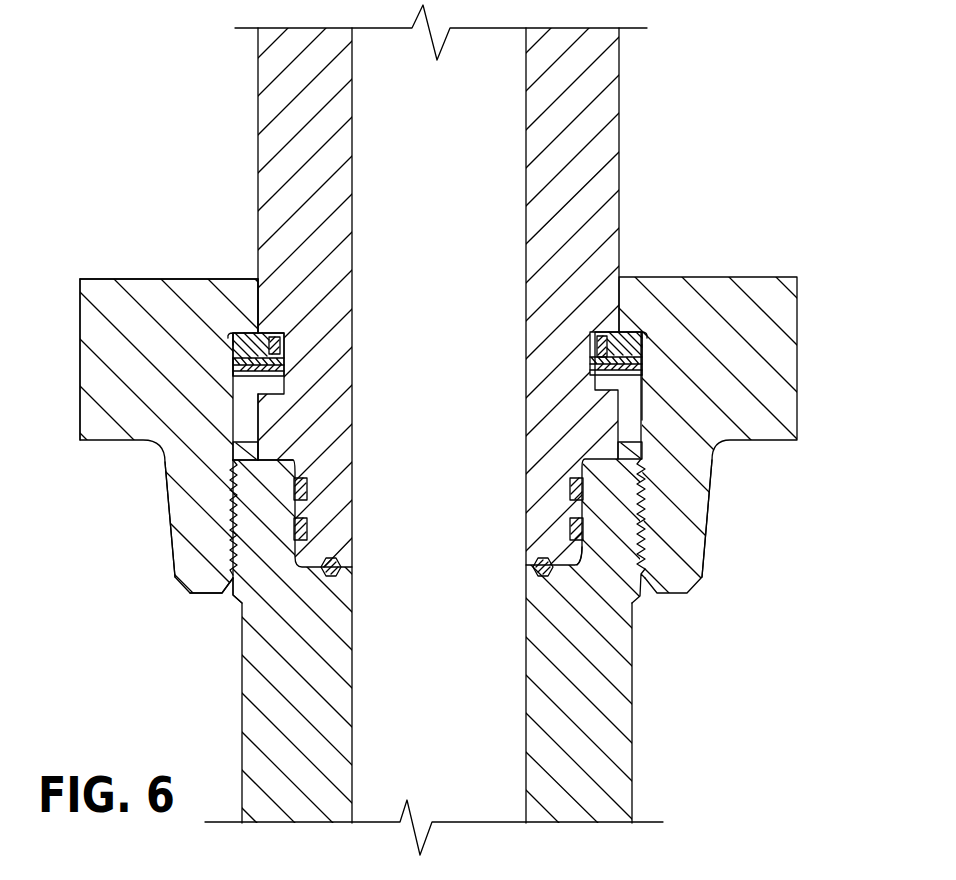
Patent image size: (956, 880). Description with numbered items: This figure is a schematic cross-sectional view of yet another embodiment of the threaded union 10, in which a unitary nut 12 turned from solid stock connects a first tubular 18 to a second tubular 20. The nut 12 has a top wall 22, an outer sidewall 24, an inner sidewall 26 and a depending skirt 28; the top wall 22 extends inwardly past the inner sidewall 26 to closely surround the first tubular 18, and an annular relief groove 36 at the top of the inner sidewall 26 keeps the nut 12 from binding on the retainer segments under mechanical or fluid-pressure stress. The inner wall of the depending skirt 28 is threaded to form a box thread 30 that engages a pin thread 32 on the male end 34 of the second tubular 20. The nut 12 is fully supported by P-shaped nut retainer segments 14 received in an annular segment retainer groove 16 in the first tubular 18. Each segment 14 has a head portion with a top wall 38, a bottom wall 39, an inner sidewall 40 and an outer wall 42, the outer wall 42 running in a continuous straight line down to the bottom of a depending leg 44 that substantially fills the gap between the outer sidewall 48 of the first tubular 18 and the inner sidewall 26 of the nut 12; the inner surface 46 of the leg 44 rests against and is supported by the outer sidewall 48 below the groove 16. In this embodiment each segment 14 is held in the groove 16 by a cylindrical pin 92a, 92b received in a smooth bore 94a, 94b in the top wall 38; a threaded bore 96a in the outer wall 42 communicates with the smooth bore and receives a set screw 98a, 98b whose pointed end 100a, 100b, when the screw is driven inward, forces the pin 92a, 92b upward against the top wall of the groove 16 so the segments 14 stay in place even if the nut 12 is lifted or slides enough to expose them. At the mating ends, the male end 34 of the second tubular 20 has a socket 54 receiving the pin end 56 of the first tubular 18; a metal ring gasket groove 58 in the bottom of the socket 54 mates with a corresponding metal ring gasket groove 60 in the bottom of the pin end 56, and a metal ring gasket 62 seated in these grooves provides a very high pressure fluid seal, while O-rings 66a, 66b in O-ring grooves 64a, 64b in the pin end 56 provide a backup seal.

The threaded union 10 is at (712, 205).
The unitary nut 12 is at (728, 277).
The P-shaped nut retainer segments 14 is at (575, 360).
The annular segment retainer groove 16 is at (233, 380).
The first tubular 18 is at (597, 183).
The second tubular 20 is at (622, 683).
The top wall 22 is at (141, 279).
The outer sidewall 24 is at (80, 345).
The inner sidewall 26 is at (643, 405).
The depending skirt 28 is at (187, 472).
The box thread 30 is at (233, 493).
The pin thread 32 is at (230, 553).
The male end 34 is at (252, 590).
The annular relief groove 36 is at (230, 337).
The top wall 38 is at (290, 272).
The bottom wall 39 is at (643, 435).
The inner sidewall 40 is at (285, 355).
The outer wall 42 is at (645, 370).
The depending leg 44 is at (265, 458).
The inner surface 46 is at (262, 418).
The outer sidewall 48 is at (250, 425).
The socket 54 is at (587, 545).
The pin end 56 is at (300, 615).
The metal ring gasket groove 58 is at (533, 575).
The metal ring gasket groove 60 is at (575, 556).
The metal ring gasket 62 is at (328, 578).
The O-ring groove 64a is at (572, 490).
The O-ring groove 64b is at (307, 528).
The O-ring 66a is at (307, 489).
The O-ring 66b is at (572, 528).
The cylindrical pin 92a is at (284, 345).
The cylindrical pin 92b is at (590, 345).
The smooth bore 94a is at (284, 362).
The smooth bore 94b is at (590, 358).
The threaded bore 96a is at (266, 348).
The set screw 98a is at (233, 366).
The set screw 98b is at (612, 360).
The pointed end 100a is at (284, 370).
The pointed end 100b is at (590, 372).